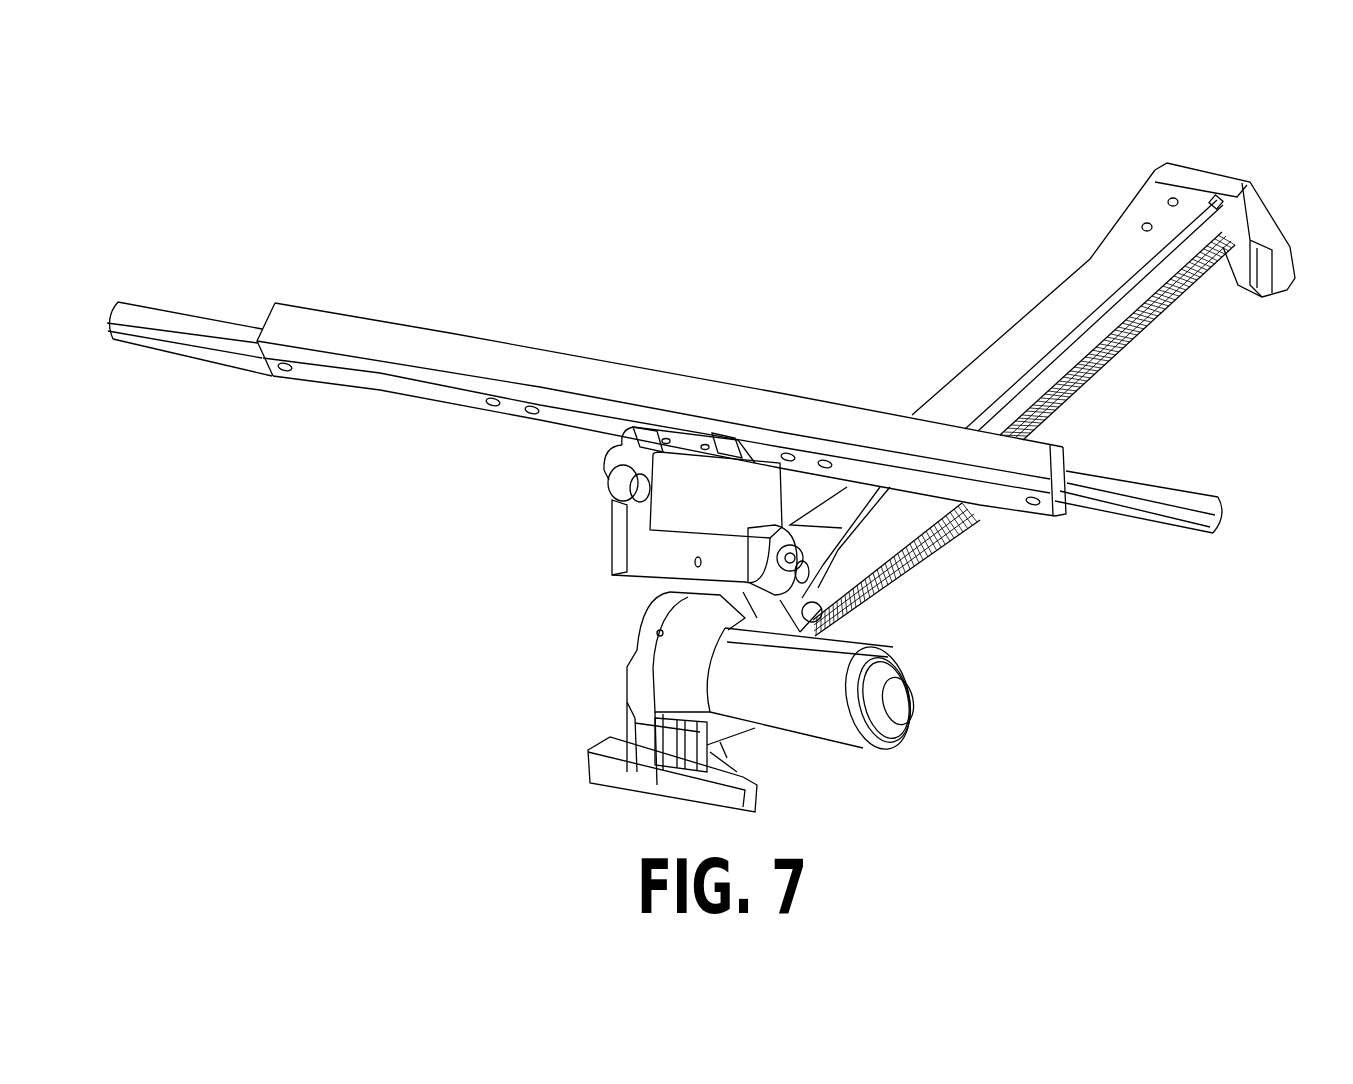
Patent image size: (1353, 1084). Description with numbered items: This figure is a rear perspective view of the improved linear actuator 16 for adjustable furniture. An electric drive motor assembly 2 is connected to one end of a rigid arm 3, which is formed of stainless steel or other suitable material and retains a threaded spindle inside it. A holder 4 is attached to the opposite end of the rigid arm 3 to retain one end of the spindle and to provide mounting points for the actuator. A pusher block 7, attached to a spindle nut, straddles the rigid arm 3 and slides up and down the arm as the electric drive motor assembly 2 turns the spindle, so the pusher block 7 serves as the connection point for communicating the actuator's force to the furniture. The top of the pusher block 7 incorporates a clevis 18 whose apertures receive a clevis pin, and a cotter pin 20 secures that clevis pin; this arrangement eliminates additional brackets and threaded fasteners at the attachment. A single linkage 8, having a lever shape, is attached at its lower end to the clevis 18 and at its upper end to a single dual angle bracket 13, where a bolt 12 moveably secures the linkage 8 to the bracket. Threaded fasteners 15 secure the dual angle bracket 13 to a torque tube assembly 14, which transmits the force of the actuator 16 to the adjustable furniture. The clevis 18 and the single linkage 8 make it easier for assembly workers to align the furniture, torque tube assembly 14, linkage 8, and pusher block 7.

The electric drive motor assembly 2 is at (815, 690).
The rigid arm 3 is at (1055, 303).
The holder 4 is at (1205, 182).
The pusher block 7 is at (836, 625).
The single linkage 8 is at (620, 558).
The bolt 12 is at (612, 462).
The dual angle bracket 13 is at (628, 425).
The torque tube assembly 14 is at (338, 327).
The threaded fasteners 15 is at (670, 437).
The linear actuator 16 is at (845, 153).
The clevis 18 is at (768, 535).
The cotter pin 20 is at (787, 540).